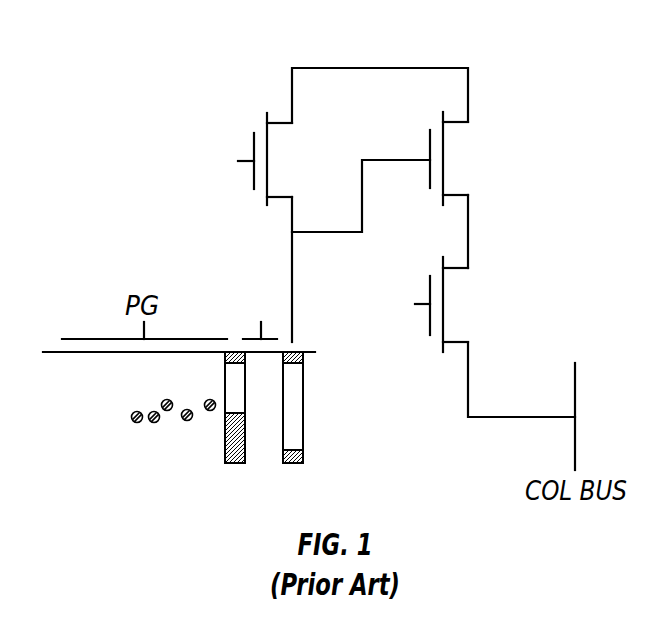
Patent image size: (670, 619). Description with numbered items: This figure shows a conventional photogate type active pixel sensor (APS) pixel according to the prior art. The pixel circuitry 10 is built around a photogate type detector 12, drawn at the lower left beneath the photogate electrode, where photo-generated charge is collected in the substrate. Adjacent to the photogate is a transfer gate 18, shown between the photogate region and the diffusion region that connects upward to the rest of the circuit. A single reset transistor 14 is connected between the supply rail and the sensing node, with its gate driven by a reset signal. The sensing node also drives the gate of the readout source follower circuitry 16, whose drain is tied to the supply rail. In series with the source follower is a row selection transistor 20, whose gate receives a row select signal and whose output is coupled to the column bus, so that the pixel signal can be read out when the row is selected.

The pixel circuitry 10 is at (242, 60).
The photogate type detector 12 is at (155, 434).
The reset transistor 14 is at (254, 140).
The readout source follower circuitry 16 is at (460, 153).
The transfer gate 18 is at (258, 330).
The row selection transistor 20 is at (427, 307).